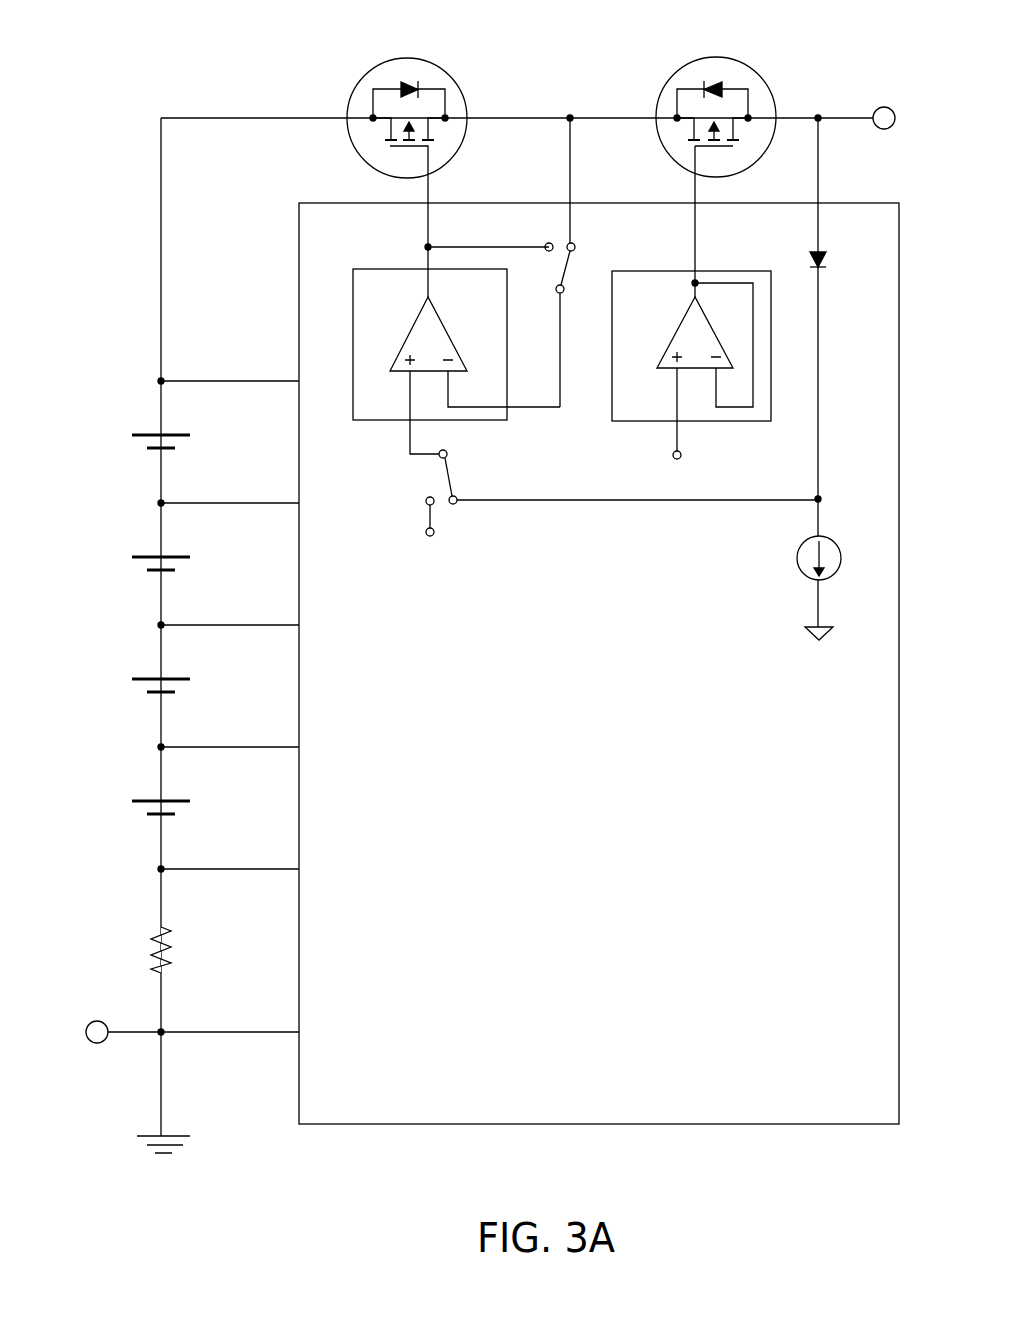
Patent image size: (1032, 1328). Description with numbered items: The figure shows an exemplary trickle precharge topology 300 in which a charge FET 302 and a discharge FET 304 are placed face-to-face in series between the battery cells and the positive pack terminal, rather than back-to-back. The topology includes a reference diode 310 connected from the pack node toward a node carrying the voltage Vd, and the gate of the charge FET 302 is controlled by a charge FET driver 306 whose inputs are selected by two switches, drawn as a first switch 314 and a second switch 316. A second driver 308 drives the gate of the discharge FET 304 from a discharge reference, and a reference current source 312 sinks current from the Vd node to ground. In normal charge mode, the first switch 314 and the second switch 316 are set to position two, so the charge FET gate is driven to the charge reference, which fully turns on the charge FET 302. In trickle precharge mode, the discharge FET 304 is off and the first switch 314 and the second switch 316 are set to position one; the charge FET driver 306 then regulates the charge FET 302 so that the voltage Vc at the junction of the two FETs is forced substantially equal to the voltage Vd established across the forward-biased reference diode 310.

The trickle precharge topology 300 is at (172, 83).
The charge FET 302 is at (432, 63).
The discharge FET 304 is at (735, 60).
The charge FET driver 306 is at (385, 420).
The discharge comparator/amplifier 308 is at (712, 425).
The reference diode D1 310 is at (828, 262).
The reference current source Iref 312 is at (800, 572).
The switch K1 314 is at (558, 236).
The switch K2 316 is at (447, 506).